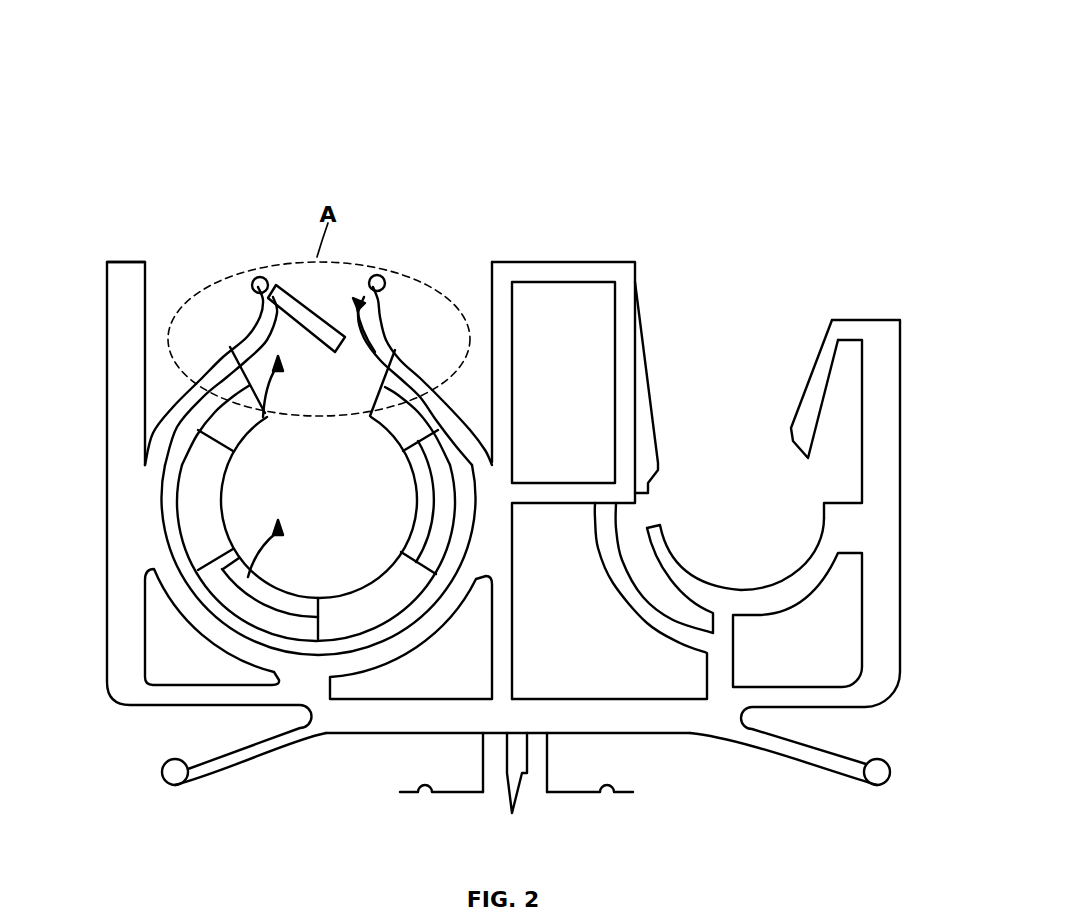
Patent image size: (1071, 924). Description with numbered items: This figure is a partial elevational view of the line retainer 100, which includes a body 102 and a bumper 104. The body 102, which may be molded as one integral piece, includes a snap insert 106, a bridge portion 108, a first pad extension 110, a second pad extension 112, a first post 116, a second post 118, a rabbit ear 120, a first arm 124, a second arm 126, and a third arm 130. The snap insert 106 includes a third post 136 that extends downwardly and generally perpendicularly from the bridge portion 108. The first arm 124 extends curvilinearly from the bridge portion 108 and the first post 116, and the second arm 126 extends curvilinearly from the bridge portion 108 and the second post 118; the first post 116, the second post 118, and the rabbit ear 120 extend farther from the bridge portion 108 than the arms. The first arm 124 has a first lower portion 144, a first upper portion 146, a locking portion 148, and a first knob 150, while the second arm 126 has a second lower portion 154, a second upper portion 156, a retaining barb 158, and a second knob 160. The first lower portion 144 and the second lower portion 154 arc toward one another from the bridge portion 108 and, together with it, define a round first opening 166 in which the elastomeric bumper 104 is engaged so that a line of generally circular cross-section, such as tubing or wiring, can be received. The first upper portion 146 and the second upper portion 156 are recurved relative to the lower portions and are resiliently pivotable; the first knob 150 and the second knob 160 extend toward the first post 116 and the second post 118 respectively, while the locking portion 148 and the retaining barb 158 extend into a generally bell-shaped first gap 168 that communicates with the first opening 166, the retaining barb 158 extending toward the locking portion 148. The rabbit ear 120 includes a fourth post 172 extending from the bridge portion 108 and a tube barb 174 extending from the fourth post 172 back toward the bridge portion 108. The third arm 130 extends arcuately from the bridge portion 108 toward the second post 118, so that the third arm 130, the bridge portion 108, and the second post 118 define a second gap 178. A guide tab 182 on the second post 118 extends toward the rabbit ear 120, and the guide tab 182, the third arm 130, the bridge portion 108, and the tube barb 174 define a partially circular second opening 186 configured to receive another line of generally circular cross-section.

The line retainer 100 is at (128, 57).
The body 102 is at (107, 350).
The bumper 104 is at (197, 480).
The snap insert 106 is at (483, 768).
The bridge portion 108 is at (155, 657).
The first pad extension 110 is at (175, 781).
The second pad extension 112 is at (878, 780).
The first post 116 is at (127, 270).
The second post 118 is at (520, 270).
The rabbit ear 120 is at (877, 338).
The first arm 124 is at (152, 433).
The second arm 126 is at (473, 427).
The third arm 130 is at (683, 577).
The third post 136 is at (547, 768).
The first lower portion 144 is at (182, 398).
The first upper portion 146 is at (250, 343).
The locking portion 148 is at (290, 280).
The first knob 150 is at (261, 277).
The second lower portion 154 is at (468, 375).
The second upper portion 156 is at (388, 345).
The retaining barb 158 is at (333, 320).
The second knob 160 is at (381, 275).
The first opening 166 is at (255, 568).
The first gap 168 is at (188, 449).
The fourth post 172 is at (888, 390).
The tube barb 174 is at (813, 405).
The second gap 178 is at (667, 598).
The guide tab 182 is at (640, 432).
The second opening 186 is at (781, 476).